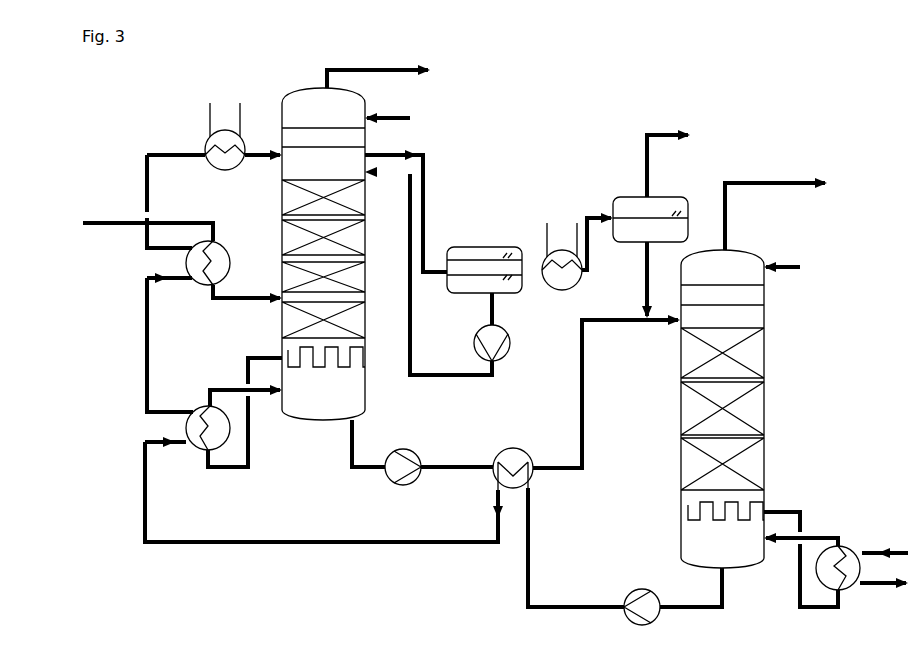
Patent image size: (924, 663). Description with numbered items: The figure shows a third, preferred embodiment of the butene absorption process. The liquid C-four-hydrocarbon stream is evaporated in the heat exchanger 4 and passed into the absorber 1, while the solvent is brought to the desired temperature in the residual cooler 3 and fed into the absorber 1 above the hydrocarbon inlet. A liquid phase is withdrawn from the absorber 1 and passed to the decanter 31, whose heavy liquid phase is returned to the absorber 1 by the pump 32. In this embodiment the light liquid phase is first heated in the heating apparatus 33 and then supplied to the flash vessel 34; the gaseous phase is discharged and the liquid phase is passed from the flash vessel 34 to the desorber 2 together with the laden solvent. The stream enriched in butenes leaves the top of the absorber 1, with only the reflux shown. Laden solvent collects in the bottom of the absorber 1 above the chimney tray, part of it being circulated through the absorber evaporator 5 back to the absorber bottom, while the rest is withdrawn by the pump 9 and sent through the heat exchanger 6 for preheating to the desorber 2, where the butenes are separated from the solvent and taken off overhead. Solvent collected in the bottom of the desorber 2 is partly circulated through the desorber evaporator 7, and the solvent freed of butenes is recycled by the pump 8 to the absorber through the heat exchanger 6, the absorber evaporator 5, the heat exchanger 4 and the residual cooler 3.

The absorber 1 is at (323, 254).
The desorber 2 is at (722, 409).
The residual cooler 3 is at (212, 136).
The heat exchanger 4 is at (218, 263).
The absorber evaporator 5 is at (206, 418).
The heat exchanger 6 is at (513, 458).
The desorber evaporator 7 is at (839, 550).
The pump 8 is at (642, 596).
The pump 9 is at (403, 482).
The decanter 31 is at (484, 257).
The pump 32 is at (504, 343).
The heating apparatus 33 is at (562, 267).
The flash vessel 34 is at (650, 207).